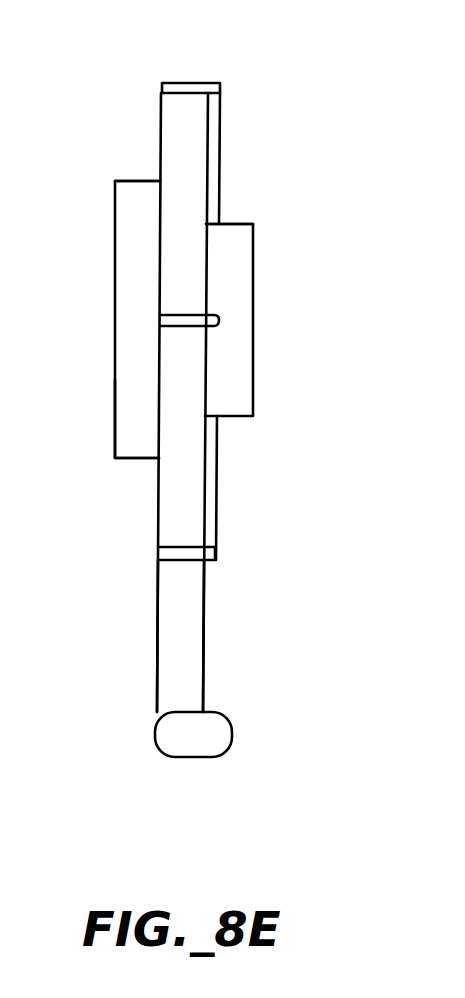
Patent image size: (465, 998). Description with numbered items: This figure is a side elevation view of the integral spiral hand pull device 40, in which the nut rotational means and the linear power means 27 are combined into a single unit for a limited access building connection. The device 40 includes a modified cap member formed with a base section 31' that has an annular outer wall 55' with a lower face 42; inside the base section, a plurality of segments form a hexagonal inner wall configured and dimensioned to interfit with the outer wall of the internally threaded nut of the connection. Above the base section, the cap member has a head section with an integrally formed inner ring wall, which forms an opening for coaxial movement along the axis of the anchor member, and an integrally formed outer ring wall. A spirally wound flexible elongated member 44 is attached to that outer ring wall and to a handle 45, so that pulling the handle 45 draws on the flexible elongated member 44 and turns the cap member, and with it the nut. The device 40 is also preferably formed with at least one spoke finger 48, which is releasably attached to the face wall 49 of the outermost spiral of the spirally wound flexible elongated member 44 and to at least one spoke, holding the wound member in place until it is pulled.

The integral spiral hand pull device 40 is at (115, 80).
The spoke finger 48 is at (188, 83).
The annular outer wall 55' is at (120, 164).
The base section 31' is at (97, 319).
The lower face 42 is at (112, 402).
The face wall 49 is at (177, 513).
The spirally wound flexible elongated member 44 is at (220, 505).
The linear power means 27 is at (205, 660).
The handle 45 is at (227, 718).